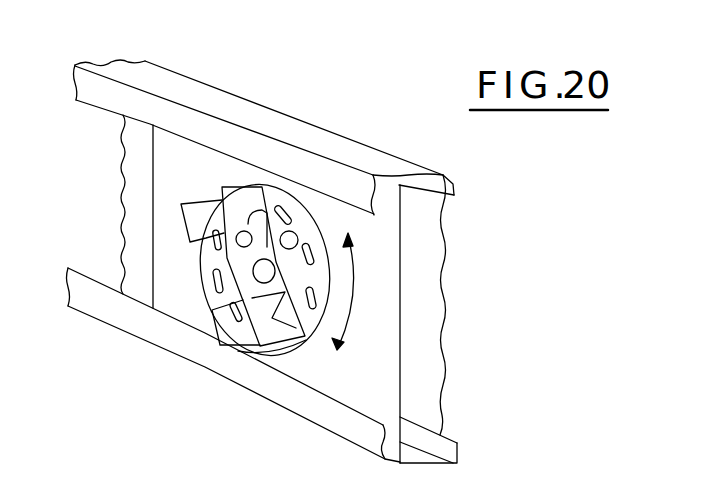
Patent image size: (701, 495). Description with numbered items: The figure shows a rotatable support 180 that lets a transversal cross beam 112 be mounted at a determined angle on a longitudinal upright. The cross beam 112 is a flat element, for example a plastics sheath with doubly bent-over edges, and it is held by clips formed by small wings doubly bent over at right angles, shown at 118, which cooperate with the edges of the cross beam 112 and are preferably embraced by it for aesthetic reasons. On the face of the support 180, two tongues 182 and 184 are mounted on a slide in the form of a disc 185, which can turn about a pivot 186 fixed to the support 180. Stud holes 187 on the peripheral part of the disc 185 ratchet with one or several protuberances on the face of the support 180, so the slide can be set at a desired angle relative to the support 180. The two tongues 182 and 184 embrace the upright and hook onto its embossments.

The cross beam 112 is at (140, 70).
The doubly bent over small wing 118 is at (455, 186).
The support 180 is at (440, 326).
The tongue 182 is at (206, 240).
The tongue 184 is at (238, 214).
The disc 185 is at (323, 333).
The pivot 186 is at (256, 274).
The stud holes 187 is at (309, 245).